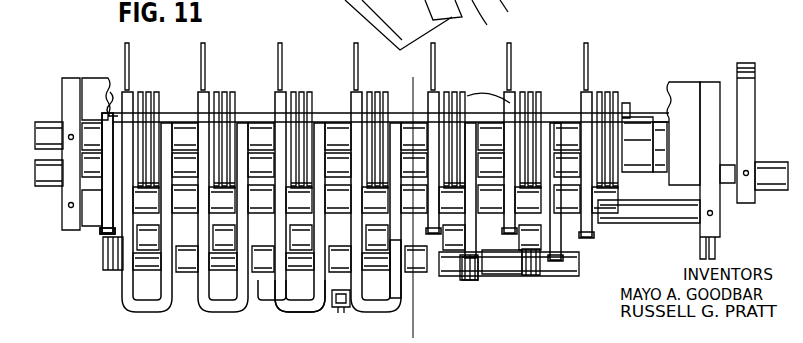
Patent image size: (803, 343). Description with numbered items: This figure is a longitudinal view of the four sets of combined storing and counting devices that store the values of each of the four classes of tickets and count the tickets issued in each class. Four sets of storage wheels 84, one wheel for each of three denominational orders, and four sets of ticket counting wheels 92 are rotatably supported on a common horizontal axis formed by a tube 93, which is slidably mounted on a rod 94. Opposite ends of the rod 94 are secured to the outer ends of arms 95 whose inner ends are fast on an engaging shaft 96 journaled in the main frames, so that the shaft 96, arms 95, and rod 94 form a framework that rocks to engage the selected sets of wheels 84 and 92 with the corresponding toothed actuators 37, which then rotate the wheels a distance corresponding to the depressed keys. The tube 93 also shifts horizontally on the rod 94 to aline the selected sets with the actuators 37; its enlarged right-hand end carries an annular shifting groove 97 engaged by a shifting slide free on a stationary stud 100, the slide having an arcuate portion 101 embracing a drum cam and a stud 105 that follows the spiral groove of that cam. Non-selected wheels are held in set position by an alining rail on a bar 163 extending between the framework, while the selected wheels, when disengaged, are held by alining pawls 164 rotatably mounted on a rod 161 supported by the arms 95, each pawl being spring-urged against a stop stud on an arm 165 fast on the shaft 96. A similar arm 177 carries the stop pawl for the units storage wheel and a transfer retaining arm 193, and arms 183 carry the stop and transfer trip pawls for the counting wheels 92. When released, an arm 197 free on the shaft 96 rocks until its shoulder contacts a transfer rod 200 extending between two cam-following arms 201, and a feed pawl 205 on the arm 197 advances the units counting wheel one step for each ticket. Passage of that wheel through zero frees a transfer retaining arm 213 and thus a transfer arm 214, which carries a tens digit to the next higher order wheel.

The actuators 37 is at (200, 55).
The storage wheels 84 is at (510, 103).
The ticket counting wheels 92 is at (133, 95).
The tube 93 is at (113, 110).
The rod 94 is at (46, 130).
The arms 95 is at (64, 88).
The engaging shaft 96 is at (43, 183).
The annular shifting groove 97 is at (634, 118).
The stationary stud 100 is at (370, 13).
The arcuate portion 101 is at (486, 24).
The stud 105 is at (518, 7).
The rod 161 is at (668, 218).
The bar 163 is at (90, 80).
The alining pawls 164 is at (126, 214).
The arm 165 is at (479, 252).
The arm 177 is at (464, 258).
The arms 183 is at (164, 244).
The transfer retaining arm 193 is at (402, 299).
The arm 197 is at (362, 305).
The transfer rod 200 is at (538, 263).
The arms 201 is at (124, 282).
The feed pawl 205 is at (375, 252).
The transfer retaining arm 213 is at (322, 308).
The transfer arm 214 is at (283, 306).